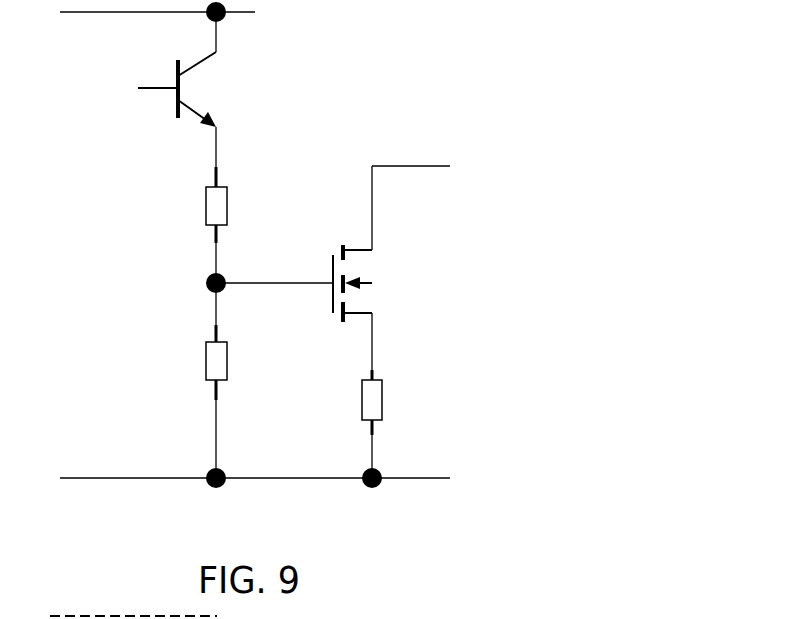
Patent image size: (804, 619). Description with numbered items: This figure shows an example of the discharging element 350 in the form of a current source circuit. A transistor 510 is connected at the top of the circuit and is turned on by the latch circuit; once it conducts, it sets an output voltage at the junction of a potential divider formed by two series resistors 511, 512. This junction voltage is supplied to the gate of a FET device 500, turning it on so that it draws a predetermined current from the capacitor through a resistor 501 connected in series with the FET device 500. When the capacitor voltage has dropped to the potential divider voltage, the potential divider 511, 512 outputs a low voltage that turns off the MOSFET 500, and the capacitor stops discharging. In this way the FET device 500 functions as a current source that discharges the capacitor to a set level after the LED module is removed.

The discharging element 350 is at (362, 45).
The transistor 510 is at (197, 63).
The potential divider resistor 511 is at (206, 222).
The potential divider resistor 512 is at (206, 380).
The FET device 500 is at (373, 287).
The resistor 501 is at (383, 418).